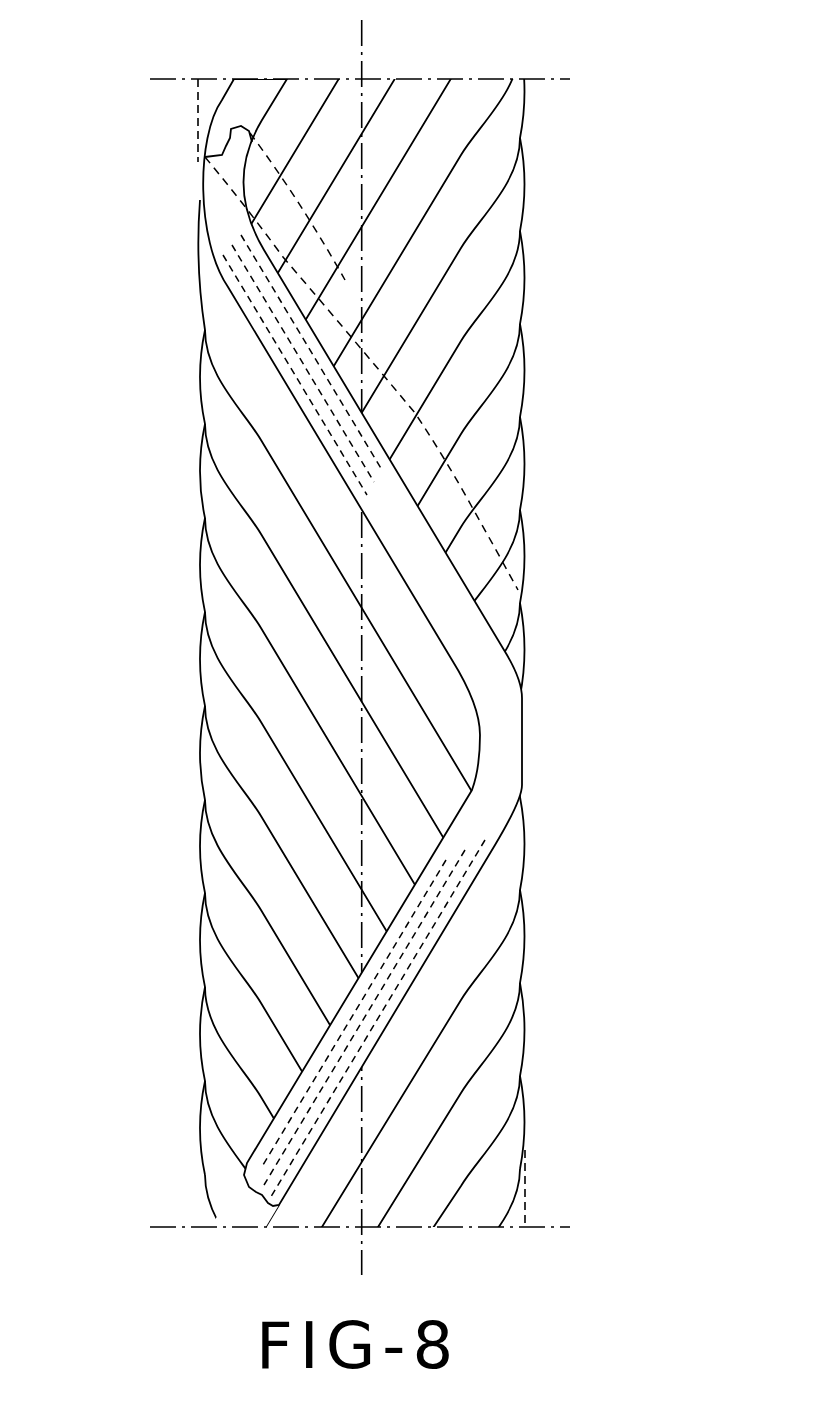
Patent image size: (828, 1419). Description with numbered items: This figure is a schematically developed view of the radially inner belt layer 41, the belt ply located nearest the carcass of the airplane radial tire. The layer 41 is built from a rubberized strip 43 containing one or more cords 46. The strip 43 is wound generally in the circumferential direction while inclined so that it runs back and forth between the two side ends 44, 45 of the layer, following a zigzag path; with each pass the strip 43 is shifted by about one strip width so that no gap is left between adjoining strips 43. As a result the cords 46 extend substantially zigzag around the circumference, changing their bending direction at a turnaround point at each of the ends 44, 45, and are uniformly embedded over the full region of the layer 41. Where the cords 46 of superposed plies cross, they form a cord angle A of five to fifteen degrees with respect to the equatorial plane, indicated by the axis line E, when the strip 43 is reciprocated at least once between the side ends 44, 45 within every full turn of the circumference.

The radially inner belt layer 41 is at (552, 233).
The rubberized strip 43 is at (518, 570).
The side end of the layer 44 is at (196, 106).
The side end of the layer 45 is at (528, 1212).
The cord 46 is at (340, 357).
The longitudinal axis E is at (358, 47).
The cord angle A is at (243, 302).